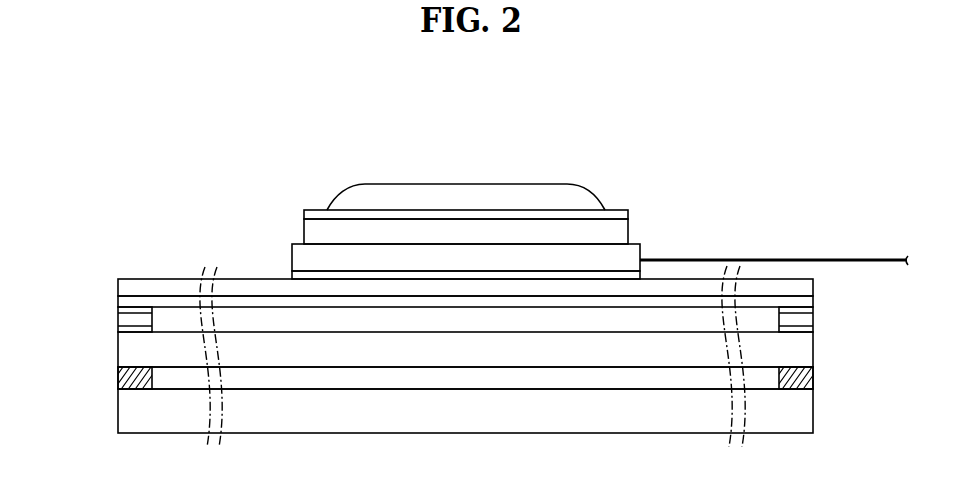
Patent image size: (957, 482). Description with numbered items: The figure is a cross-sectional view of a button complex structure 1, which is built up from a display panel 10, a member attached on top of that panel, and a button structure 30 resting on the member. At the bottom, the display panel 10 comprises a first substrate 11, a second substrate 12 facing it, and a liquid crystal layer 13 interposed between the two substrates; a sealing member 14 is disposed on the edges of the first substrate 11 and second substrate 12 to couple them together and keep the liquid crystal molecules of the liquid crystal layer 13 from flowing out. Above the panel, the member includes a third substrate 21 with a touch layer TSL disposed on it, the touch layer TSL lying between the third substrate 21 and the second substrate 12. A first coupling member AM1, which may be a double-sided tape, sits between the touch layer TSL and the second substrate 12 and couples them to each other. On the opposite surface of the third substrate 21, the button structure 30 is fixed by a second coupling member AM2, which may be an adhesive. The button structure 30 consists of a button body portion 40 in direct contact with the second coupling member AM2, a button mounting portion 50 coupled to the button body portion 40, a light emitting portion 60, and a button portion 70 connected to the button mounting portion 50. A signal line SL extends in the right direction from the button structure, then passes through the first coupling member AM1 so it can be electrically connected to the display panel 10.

The button complex structure 1 is at (569, 148).
The display panel 10 is at (57, 343).
The first substrate 11 is at (130, 418).
The second substrate 12 is at (130, 350).
The liquid crystal layer 13 is at (170, 382).
The sealing member 14 is at (128, 378).
The third substrate 21 is at (128, 287).
The button structure 30 is at (234, 135).
The button body portion 40 is at (302, 255).
The button mounting portion 50 is at (313, 230).
The light emitting portion 60 is at (312, 213).
The button portion 70 is at (343, 200).
The first coupling member AM1 is at (130, 321).
The second coupling member AM2 is at (297, 275).
The touch layer TSL is at (127, 303).
The signal line SL is at (868, 258).